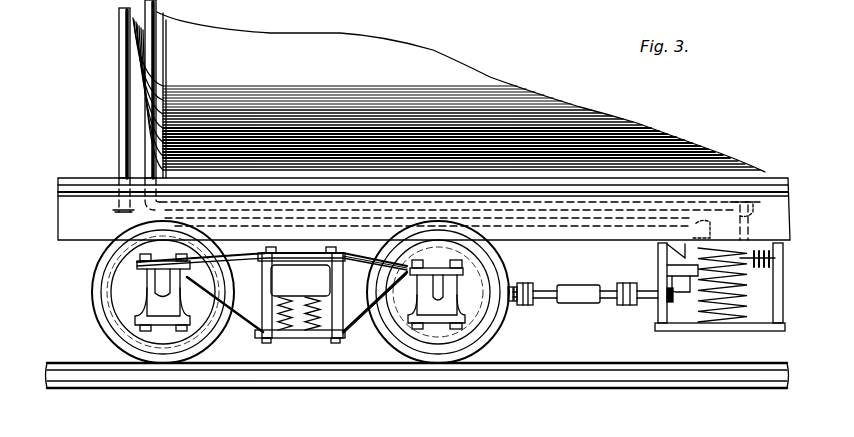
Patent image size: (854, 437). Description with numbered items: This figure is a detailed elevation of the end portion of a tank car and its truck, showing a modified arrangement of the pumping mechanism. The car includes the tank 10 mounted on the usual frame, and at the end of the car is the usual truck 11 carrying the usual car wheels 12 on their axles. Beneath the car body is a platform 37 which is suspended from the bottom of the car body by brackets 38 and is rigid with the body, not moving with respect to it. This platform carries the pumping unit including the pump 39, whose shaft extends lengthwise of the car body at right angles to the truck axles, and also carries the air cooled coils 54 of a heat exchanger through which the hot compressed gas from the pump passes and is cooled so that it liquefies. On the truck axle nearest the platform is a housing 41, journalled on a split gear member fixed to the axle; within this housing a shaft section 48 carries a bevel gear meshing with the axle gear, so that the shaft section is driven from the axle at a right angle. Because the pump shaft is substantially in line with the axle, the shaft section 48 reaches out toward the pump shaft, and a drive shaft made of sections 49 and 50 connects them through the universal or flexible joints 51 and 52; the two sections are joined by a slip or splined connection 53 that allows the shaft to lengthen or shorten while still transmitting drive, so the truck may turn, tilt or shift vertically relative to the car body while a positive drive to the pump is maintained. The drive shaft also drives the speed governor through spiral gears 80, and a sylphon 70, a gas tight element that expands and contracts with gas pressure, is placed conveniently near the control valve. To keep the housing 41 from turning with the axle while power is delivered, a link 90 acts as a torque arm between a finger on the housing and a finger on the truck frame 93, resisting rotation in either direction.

The tank 10 is at (418, 60).
The end truck 11 is at (268, 352).
The car wheel 12 is at (120, 323).
The platform 37 is at (694, 329).
The bracket 38 is at (661, 308).
The pump 39 is at (690, 304).
The housing 41 is at (440, 342).
The shaft section 48 is at (508, 306).
The drive shaft section 49 is at (537, 290).
The drive shaft section 50 is at (609, 290).
The universal or flexible joint 51 is at (520, 305).
The universal or flexible joint 52 is at (627, 284).
The slip or splined connection 53 is at (580, 273).
The air cooled coils 54 is at (735, 302).
The sylphon 70 is at (775, 258).
The spiral gears 80 is at (662, 298).
The link 90 is at (362, 318).
The truck frame 93 is at (366, 264).